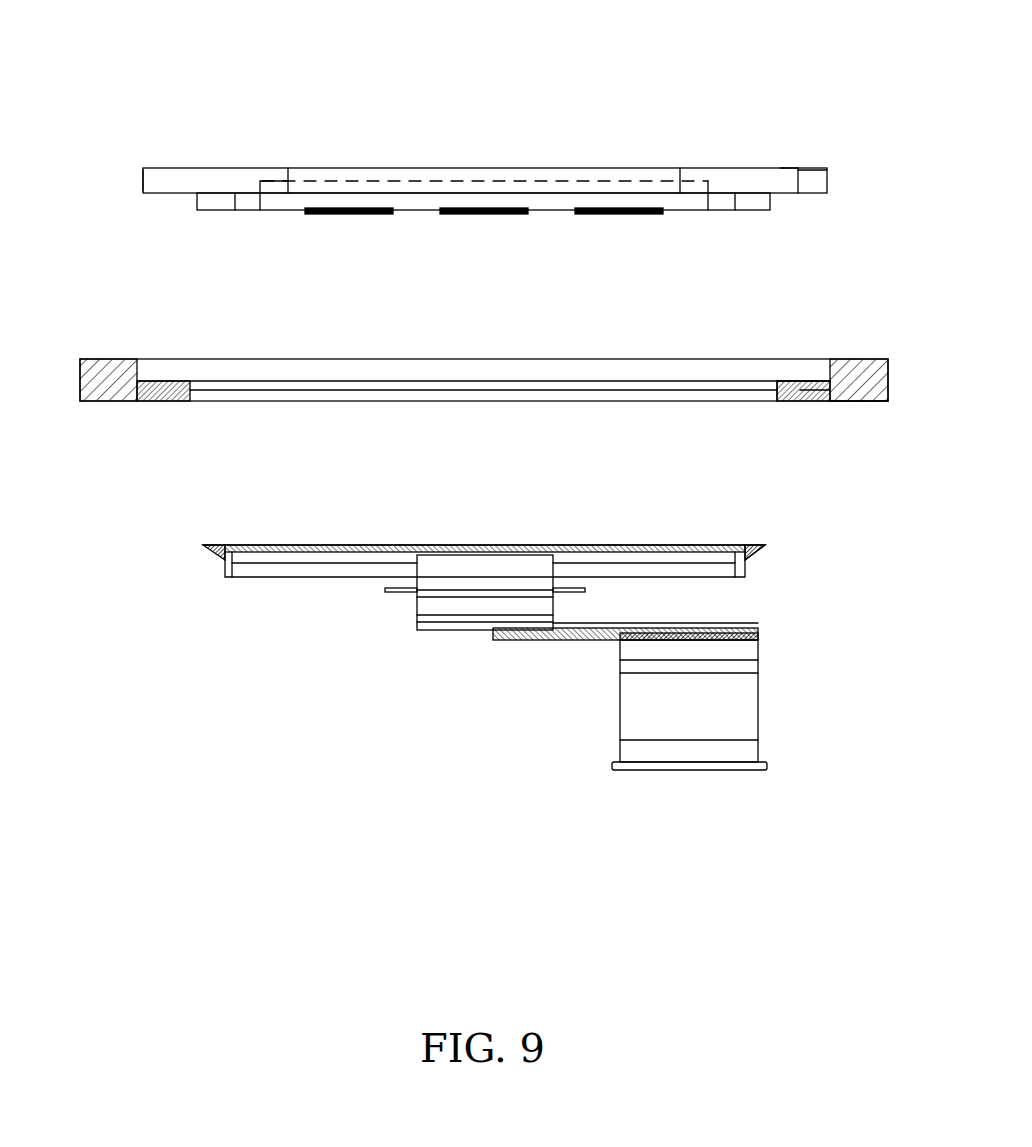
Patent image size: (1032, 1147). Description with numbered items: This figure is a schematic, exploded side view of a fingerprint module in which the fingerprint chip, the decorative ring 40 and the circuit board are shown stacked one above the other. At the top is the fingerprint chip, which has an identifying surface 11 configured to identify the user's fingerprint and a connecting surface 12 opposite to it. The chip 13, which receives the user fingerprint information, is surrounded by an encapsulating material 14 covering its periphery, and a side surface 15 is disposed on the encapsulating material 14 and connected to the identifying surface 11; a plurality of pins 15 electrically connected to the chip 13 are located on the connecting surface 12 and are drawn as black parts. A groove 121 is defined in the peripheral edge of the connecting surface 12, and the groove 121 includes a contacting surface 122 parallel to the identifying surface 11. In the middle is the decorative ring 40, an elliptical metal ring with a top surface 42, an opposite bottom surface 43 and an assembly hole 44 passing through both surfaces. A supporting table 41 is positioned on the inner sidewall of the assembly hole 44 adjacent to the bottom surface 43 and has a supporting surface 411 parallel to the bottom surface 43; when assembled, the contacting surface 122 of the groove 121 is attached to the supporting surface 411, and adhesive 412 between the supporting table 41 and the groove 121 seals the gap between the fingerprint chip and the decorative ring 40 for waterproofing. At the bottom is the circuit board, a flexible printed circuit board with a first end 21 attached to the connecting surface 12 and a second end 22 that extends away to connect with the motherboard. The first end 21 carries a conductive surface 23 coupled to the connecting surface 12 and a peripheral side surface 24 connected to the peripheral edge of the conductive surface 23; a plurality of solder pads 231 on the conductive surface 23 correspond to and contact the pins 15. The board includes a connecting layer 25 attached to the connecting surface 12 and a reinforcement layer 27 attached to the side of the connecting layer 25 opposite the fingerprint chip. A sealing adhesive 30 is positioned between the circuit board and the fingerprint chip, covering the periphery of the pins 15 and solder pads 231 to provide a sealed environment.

The identifying surface 11 is at (645, 168).
The connecting surface 12 is at (272, 210).
The chip 13 is at (315, 180).
The encapsulating material 14 is at (207, 180).
The pins 15 is at (610, 214).
The groove 121 is at (800, 193).
The contacting surface 122 is at (795, 168).
The decorative ring 40 is at (183, 431).
The supporting table 41 is at (800, 392).
The supporting surface 411 is at (823, 395).
The adhesive 412 is at (777, 385).
The top surface 42 is at (860, 372).
The bottom surface 43 is at (843, 402).
The assembly hole 44 is at (795, 372).
The first end 21 is at (316, 592).
The second end 22 is at (578, 760).
The conductive surface 23 is at (705, 550).
The solder pads 231 is at (615, 545).
The peripheral side surface 24 is at (745, 555).
The connecting layer 25 is at (363, 555).
The reinforcement layer 27 is at (247, 572).
The sealing adhesive 30 is at (215, 548).